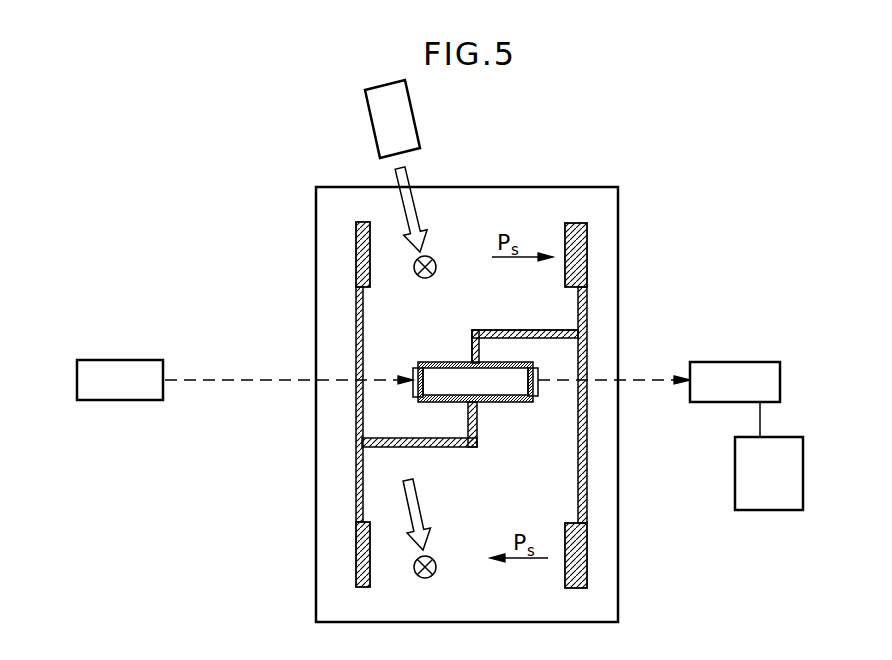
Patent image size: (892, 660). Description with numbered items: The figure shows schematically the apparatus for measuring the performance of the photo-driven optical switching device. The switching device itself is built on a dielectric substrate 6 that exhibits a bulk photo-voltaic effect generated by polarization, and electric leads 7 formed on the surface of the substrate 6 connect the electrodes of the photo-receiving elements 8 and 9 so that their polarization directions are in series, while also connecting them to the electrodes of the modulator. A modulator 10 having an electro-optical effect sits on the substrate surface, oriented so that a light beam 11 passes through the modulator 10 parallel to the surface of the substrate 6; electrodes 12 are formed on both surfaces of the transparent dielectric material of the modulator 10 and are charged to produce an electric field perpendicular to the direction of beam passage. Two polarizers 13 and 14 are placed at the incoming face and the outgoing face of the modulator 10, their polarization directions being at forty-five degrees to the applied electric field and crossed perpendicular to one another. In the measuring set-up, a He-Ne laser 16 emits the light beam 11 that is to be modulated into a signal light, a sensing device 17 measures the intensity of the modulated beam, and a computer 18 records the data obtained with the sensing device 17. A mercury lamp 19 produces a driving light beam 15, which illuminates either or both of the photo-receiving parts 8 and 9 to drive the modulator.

The dielectric substrate 6 is at (316, 583).
The electric leads 7 is at (356, 330).
The photo-receiving element 8 is at (438, 259).
The photo-receiving element 9 is at (467, 597).
The modulator 10 is at (440, 380).
The light beam 11 is at (248, 380).
The electrodes 12 is at (450, 362).
The polarizer 13 is at (413, 368).
The polarizer 14 is at (538, 385).
The driving light beam 15 is at (405, 172).
The He-Ne laser 16 is at (125, 360).
The sensing device 17 is at (737, 372).
The computer 18 is at (767, 497).
The mercury lamp 19 is at (372, 115).